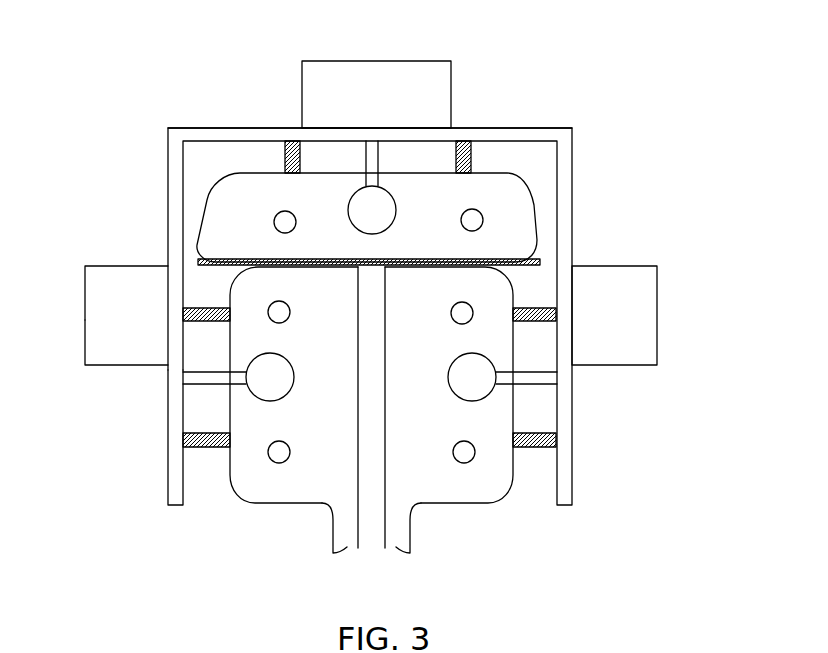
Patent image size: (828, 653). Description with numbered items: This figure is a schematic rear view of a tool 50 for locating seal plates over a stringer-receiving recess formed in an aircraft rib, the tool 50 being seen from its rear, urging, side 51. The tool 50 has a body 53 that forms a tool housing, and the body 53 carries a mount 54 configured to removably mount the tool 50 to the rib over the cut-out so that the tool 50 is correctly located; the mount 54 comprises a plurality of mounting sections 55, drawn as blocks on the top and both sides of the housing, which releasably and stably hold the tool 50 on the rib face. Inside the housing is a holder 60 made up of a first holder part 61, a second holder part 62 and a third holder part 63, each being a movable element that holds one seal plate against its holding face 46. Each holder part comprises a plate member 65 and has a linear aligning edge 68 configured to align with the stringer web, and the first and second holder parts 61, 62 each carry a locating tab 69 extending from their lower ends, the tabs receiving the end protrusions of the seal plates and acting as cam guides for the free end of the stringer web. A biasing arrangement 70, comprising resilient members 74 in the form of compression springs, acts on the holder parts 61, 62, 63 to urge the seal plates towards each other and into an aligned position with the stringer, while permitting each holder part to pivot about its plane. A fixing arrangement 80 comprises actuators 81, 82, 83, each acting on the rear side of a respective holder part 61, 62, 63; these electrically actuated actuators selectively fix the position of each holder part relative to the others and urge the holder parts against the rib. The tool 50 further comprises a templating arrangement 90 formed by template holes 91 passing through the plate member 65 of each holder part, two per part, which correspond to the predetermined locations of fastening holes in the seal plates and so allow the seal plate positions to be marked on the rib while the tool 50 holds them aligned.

The holding face 46 is at (462, 463).
The tool 50 is at (580, 106).
The rear, urging, side 51 is at (170, 222).
The body 53 is at (172, 402).
The mount 54 is at (100, 338).
The mounting sections 55 is at (400, 80).
The holder 60 is at (430, 185).
The first holder part 61 is at (255, 490).
The second holder part 62 is at (495, 416).
The third holder part 63 is at (262, 190).
The plate member 65 is at (500, 470).
The aligning edge 68 is at (383, 500).
The locating tab 69 is at (335, 532).
The biasing arrangement 70 is at (530, 305).
The resilient members 74 is at (297, 152).
The fixing arrangement 80 is at (460, 385).
The actuator 81 is at (282, 377).
The actuator 82 is at (460, 370).
The actuator 83 is at (375, 210).
The templating arrangement 90 is at (276, 305).
The template holes 91 is at (286, 222).